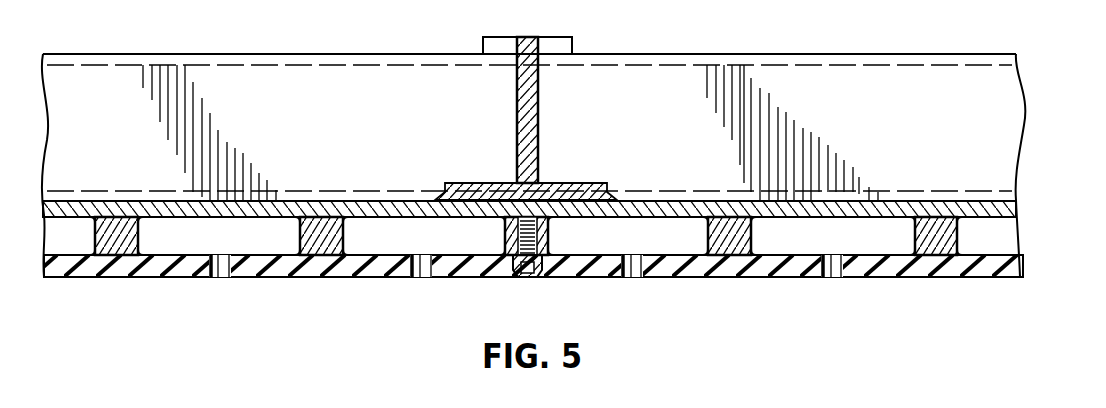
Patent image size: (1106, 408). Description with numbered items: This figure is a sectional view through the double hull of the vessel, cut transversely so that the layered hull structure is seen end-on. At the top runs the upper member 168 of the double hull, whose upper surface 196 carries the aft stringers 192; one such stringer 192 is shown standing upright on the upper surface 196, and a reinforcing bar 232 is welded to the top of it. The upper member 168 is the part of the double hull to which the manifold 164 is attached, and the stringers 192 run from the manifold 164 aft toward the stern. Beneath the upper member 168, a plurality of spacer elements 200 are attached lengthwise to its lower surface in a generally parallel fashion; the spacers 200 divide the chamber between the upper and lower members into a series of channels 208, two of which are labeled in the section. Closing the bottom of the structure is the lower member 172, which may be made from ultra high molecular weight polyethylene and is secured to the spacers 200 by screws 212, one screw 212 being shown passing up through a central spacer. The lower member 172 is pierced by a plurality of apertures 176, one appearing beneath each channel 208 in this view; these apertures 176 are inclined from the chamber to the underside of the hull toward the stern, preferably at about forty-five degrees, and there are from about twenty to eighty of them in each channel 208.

The manifold 164 is at (645, 125).
The upper member 168 is at (558, 226).
The lower member 172 is at (1012, 264).
The apertures 176 is at (226, 279).
The aft stringers 192 is at (517, 93).
The upper surface 196 is at (950, 205).
The spacer elements 200 is at (333, 258).
The channels 208 is at (437, 249).
The screws 212 is at (515, 280).
The reinforcing bars 232 is at (560, 37).